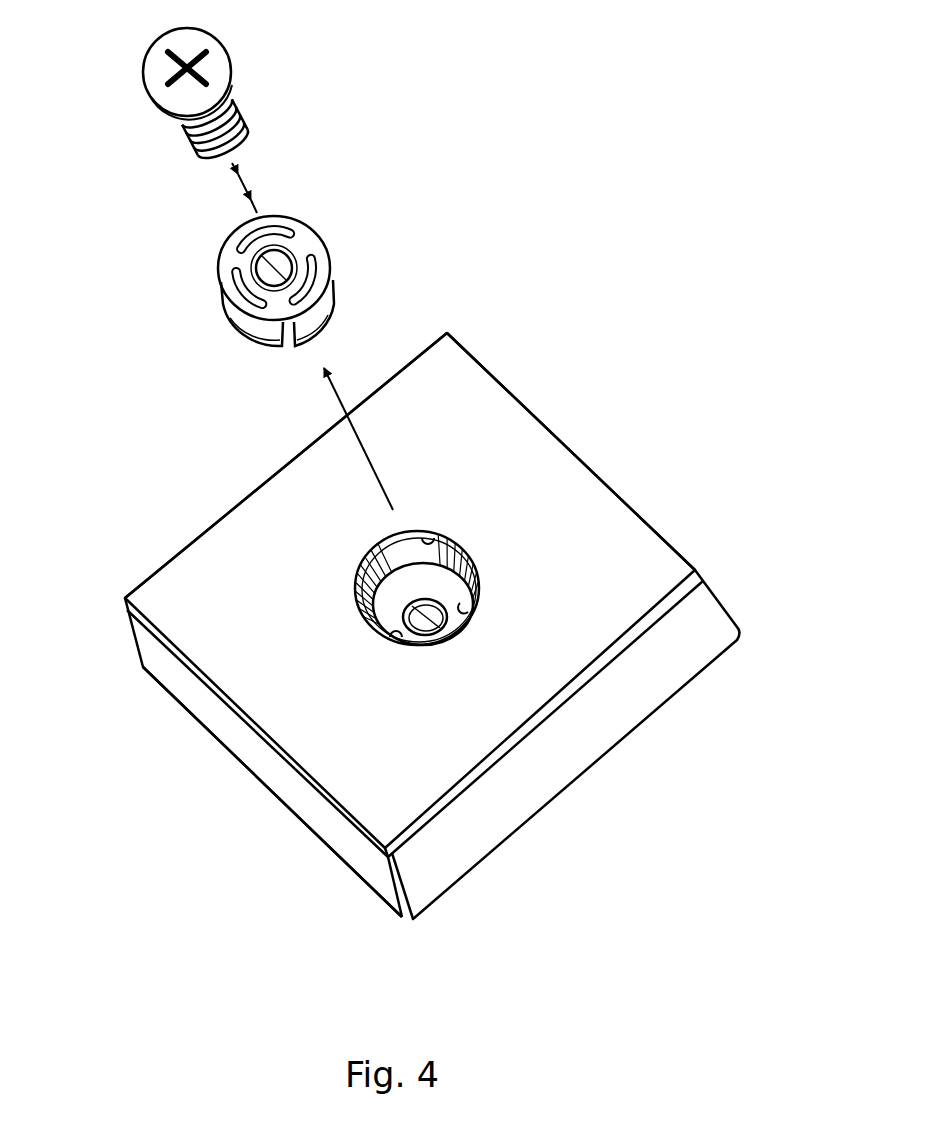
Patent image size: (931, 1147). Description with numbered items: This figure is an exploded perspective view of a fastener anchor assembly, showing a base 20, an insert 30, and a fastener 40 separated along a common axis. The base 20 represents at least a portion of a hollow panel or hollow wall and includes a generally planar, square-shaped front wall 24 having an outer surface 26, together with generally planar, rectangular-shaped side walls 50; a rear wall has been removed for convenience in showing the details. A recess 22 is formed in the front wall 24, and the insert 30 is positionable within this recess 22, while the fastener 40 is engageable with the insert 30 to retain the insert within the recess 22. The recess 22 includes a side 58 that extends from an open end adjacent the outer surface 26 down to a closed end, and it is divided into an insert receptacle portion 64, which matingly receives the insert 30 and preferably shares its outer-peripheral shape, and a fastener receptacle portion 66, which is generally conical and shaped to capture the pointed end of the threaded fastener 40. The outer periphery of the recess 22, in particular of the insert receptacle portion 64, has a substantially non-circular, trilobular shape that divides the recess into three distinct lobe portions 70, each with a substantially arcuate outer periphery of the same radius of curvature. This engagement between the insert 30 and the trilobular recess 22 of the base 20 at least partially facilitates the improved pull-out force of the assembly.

The base 20 is at (673, 542).
The recess 22 is at (406, 589).
The front wall 24 is at (207, 618).
The outer surface 26 is at (593, 495).
The insert 30 is at (342, 250).
The fastener 40 is at (226, 48).
The side walls 50 is at (247, 738).
The side 58 is at (383, 571).
The insert receptacle portion 64 is at (373, 607).
The fastener receptacle portion 66 is at (442, 605).
The lobe portions 70 is at (433, 537).